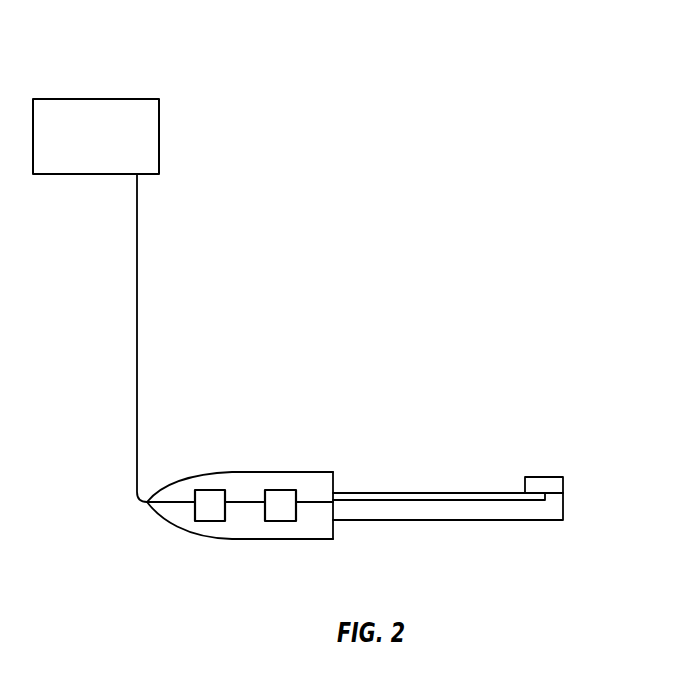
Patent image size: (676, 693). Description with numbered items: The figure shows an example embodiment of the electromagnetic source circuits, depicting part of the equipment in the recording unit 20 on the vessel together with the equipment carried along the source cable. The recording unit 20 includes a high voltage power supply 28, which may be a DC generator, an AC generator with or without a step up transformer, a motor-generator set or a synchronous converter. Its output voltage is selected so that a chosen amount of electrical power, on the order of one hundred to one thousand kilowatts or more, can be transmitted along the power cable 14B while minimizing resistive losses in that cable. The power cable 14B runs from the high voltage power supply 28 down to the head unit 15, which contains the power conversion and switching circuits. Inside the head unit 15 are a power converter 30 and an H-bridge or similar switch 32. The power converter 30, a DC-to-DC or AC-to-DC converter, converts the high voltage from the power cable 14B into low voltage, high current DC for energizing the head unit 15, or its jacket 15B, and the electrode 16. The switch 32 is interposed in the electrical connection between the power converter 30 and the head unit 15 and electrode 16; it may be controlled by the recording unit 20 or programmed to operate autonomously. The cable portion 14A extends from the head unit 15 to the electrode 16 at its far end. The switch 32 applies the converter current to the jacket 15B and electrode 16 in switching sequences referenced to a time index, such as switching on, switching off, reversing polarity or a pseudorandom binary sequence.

The recording unit 20 is at (147, 58).
The high voltage power supply 28 is at (159, 137).
The power cable 14B is at (137, 333).
The source cable portion 14A is at (502, 520).
The head unit 15 is at (240, 540).
The jacket 15B is at (282, 540).
The power converter 30 is at (212, 490).
The switch 32 is at (280, 490).
The electrode 16 is at (545, 476).